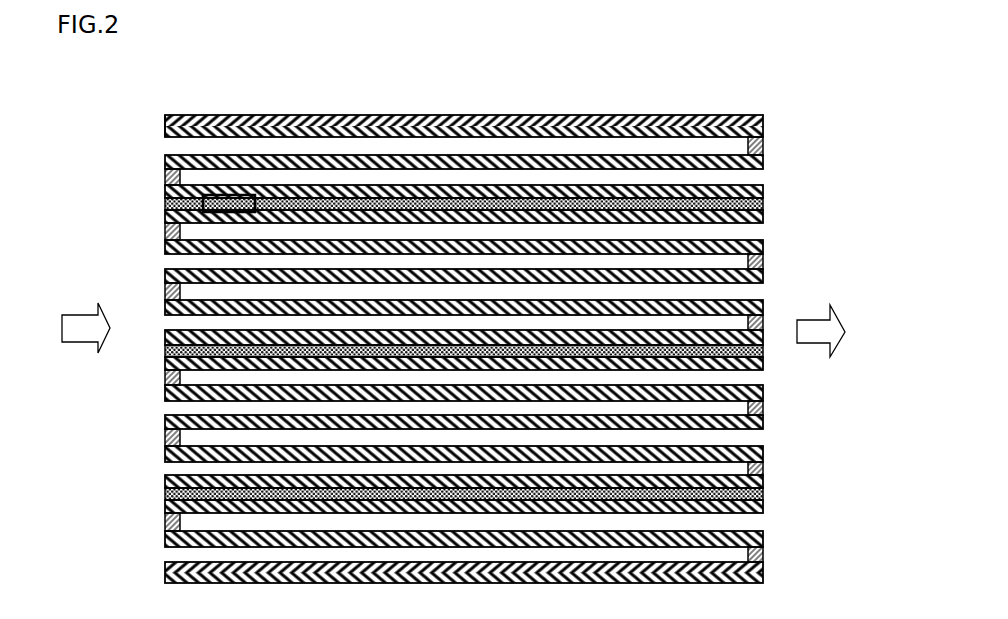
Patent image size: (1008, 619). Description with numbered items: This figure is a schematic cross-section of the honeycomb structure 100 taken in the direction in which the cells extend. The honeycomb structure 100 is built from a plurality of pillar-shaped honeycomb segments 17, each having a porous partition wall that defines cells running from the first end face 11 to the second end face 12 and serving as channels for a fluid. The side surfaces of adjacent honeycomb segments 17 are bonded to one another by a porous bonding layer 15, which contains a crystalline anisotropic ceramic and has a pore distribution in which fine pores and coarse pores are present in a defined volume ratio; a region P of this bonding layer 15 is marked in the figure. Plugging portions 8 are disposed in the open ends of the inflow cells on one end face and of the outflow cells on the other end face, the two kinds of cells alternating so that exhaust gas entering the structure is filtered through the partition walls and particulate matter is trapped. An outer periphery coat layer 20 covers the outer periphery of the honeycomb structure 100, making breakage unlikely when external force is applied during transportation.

The honeycomb structure 100 is at (825, 75).
The outer periphery coat layer 20 is at (414, 115).
The first end face 11 is at (165, 137).
The second end face 12 is at (763, 131).
The bonding layer 15 is at (763, 204).
The region P is at (203, 203).
The honeycomb segment 17 is at (158, 230).
The plugging portion 8 is at (165, 437).